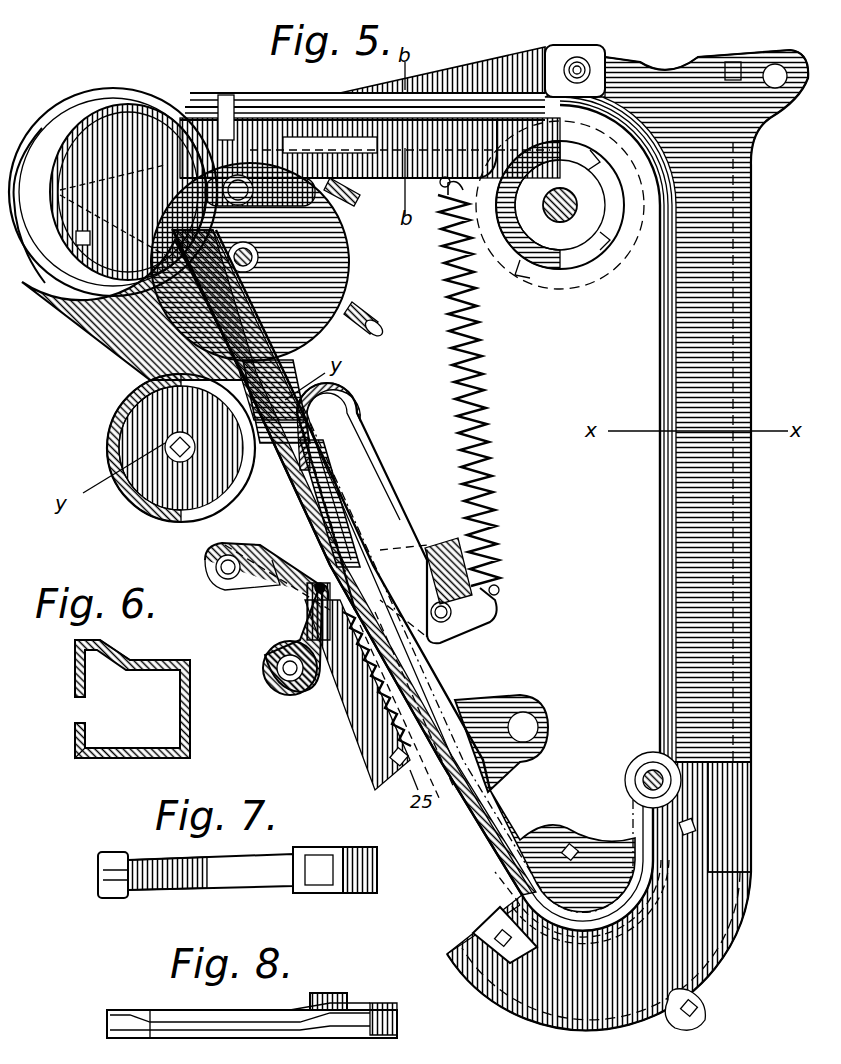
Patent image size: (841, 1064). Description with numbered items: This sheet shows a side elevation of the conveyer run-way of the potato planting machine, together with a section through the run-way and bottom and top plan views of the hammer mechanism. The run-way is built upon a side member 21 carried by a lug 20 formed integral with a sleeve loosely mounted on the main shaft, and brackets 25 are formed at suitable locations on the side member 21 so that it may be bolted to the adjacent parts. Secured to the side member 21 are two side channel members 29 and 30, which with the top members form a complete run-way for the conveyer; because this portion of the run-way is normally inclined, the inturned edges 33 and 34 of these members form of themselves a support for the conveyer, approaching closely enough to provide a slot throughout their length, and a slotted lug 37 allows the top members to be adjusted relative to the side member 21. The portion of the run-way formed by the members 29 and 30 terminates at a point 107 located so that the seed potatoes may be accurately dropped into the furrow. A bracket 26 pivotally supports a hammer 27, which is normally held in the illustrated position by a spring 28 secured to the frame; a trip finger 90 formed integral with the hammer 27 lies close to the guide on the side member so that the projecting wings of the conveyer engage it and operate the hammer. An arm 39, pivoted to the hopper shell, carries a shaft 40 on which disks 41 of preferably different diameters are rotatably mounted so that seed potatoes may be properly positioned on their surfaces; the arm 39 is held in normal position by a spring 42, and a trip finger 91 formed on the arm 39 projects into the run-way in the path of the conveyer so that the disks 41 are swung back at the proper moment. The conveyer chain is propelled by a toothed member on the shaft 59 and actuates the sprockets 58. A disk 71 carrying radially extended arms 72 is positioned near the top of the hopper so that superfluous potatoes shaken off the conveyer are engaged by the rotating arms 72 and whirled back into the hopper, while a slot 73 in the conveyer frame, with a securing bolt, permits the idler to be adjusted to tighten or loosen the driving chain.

In FIG. 5, the lug 20 is at (482, 720).
In FIG. 5, the side member 21 is at (480, 800).
In FIG. 5, the brackets 25 is at (352, 430).
In FIG. 5, the bracket 26 is at (440, 625).
In FIG. 5, the hammer 27 is at (403, 507).
In FIG. 7, the hammer 27 is at (237, 872).
In FIG. 8, the hammer 27 is at (283, 1030).
In FIG. 5, the spring 28 is at (484, 430).
In FIG. 6, the side channel member 29 is at (150, 660).
In FIG. 5, the side channel member 30 is at (700, 388).
In FIG. 6, the side channel member 30 is at (128, 752).
In FIG. 6, the inturned edge 33 is at (74, 738).
In FIG. 6, the inturned edge 34 is at (56, 668).
In FIG. 5, the slotted lug 37 is at (225, 175).
In FIG. 5, the arm 39 is at (295, 640).
In FIG. 5, the shaft 40 is at (176, 462).
In FIG. 5, the disks 41 is at (110, 438).
In FIG. 5, the spring 42 is at (375, 700).
In FIG. 5, the sprockets 58 is at (566, 270).
In FIG. 5, the shaft 59 is at (566, 196).
In FIG. 5, the disk 71 is at (330, 255).
In FIG. 5, the radially extended arms 72 is at (365, 318).
In FIG. 5, the slot 73 is at (358, 190).
In FIG. 5, the trip finger 90 is at (432, 560).
In FIG. 7, the trip finger 90 is at (318, 880).
In FIG. 5, the trip finger 91 is at (330, 650).
In FIG. 5, the point 107 is at (478, 940).